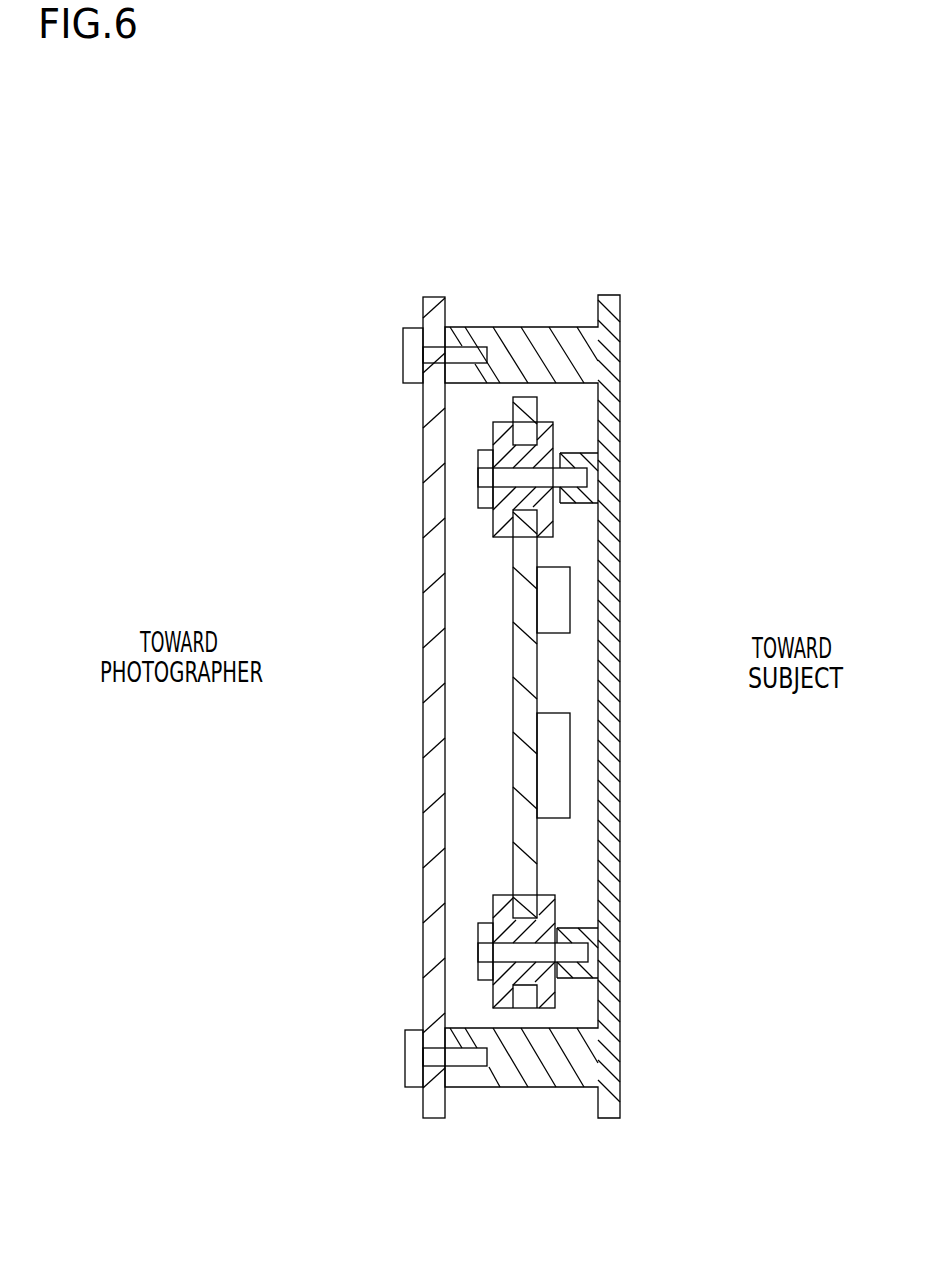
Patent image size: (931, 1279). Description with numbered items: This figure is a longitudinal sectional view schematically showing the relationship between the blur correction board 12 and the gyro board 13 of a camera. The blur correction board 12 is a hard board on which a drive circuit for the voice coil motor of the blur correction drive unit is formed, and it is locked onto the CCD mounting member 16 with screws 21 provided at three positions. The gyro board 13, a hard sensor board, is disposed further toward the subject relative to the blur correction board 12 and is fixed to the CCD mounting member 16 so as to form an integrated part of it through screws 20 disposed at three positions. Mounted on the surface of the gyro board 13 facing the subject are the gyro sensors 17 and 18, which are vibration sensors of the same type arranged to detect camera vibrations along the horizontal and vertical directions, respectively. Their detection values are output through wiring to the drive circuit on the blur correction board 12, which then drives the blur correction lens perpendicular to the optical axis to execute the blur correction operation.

The blur correction board 12 is at (432, 563).
The gyro board 13 is at (525, 637).
The CCD mounting member 16 is at (608, 307).
The gyro sensor 17 is at (557, 600).
The gyro sensor 18 is at (557, 762).
The screws 20 is at (483, 480).
The screws 21 is at (410, 353).